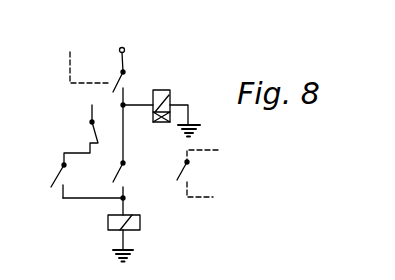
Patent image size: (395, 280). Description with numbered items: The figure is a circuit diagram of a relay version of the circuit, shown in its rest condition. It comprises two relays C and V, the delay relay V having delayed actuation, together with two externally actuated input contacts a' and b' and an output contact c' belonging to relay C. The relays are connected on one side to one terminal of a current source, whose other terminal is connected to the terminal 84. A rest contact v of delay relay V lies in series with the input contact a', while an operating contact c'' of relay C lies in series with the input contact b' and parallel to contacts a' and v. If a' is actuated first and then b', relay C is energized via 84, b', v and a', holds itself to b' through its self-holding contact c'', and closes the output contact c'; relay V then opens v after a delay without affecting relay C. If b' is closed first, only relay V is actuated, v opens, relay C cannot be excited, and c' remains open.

The terminal 84 is at (123, 47).
The input contact b' is at (86, 55).
The delay relay V is at (176, 102).
The rest contact v is at (83, 143).
The input contact a' is at (36, 179).
The operating contact c'' is at (130, 179).
The output contact c' is at (207, 173).
The relay C is at (134, 238).